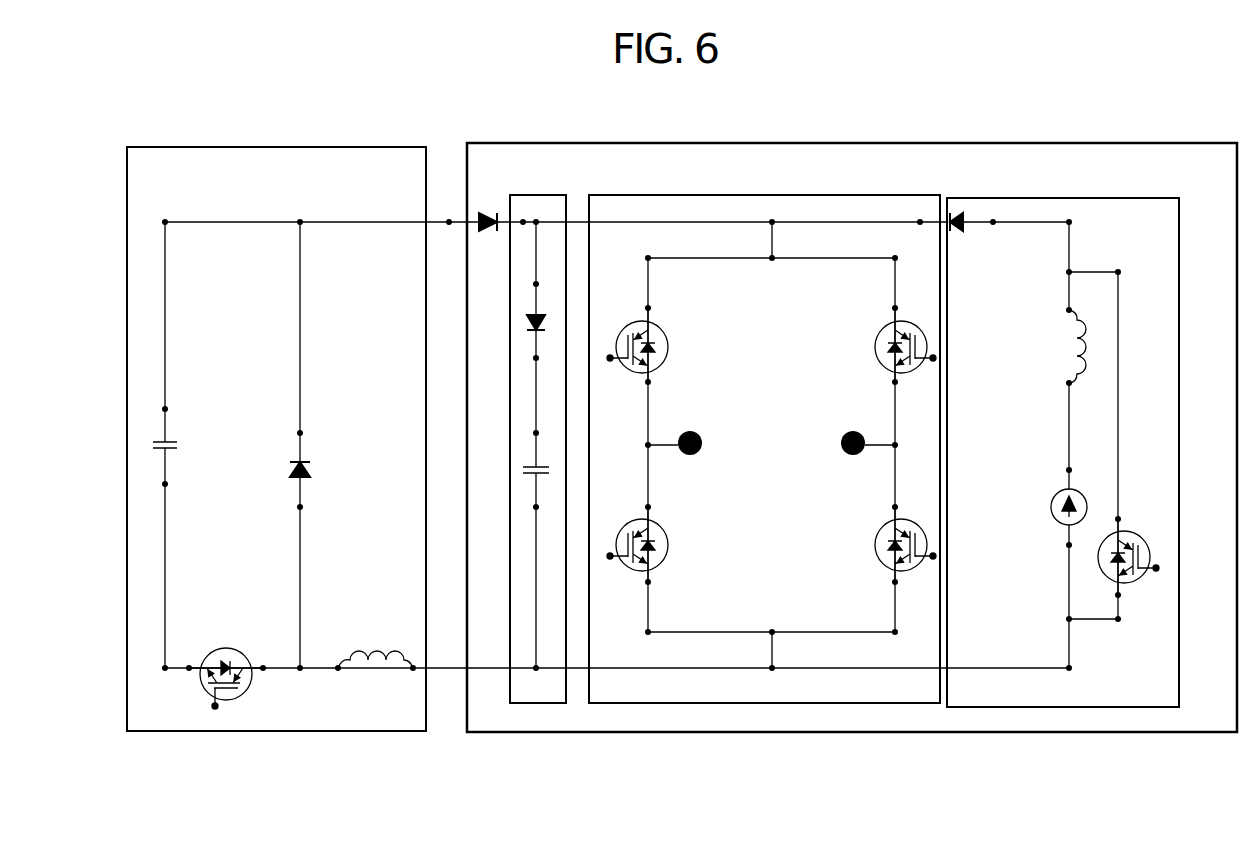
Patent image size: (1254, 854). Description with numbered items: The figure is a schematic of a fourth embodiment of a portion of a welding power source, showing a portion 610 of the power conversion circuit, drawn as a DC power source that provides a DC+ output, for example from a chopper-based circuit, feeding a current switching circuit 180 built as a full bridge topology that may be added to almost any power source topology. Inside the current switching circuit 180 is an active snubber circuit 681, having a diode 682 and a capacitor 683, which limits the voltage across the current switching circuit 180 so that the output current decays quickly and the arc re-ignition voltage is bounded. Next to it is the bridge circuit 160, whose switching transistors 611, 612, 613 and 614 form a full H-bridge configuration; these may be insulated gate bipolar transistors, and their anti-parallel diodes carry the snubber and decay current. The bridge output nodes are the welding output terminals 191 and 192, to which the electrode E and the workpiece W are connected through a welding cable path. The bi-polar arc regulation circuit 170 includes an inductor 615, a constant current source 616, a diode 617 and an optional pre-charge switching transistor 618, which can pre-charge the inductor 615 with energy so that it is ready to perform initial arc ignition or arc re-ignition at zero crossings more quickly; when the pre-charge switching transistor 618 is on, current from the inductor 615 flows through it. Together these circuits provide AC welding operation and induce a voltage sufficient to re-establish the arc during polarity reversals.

The portion of the power conversion circuit 610 is at (200, 147).
The current switching circuit 180 is at (922, 146).
The bridge circuit 160 is at (764, 432).
The arc regulation circuit 170 is at (1087, 434).
The active snubber circuit 681 is at (519, 430).
The diode 682 is at (532, 314).
The capacitor 683 is at (532, 465).
The switching transistor 611 is at (658, 330).
The switching transistor 612 is at (662, 528).
The switching transistor 613 is at (885, 328).
The switching transistor 614 is at (878, 535).
The welding output terminal 191 is at (687, 431).
The welding output terminal 192 is at (841, 444).
The inductor 615 is at (1067, 334).
The constant current source 616 is at (1051, 497).
The diode 617 is at (962, 236).
The pre-charge switching transistor 618 is at (1133, 531).